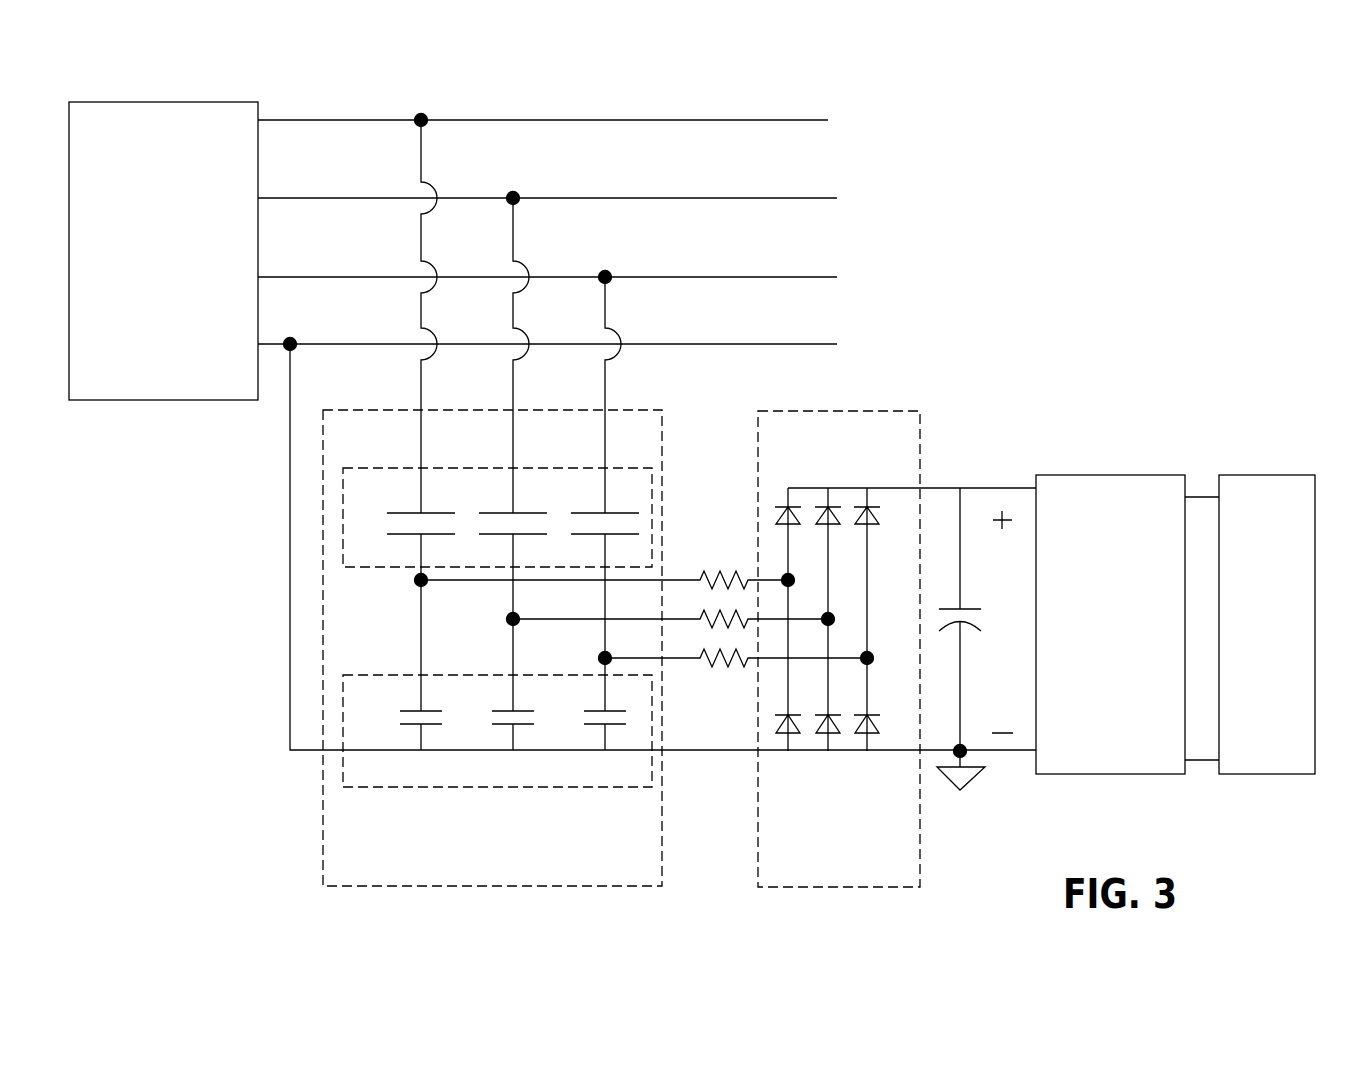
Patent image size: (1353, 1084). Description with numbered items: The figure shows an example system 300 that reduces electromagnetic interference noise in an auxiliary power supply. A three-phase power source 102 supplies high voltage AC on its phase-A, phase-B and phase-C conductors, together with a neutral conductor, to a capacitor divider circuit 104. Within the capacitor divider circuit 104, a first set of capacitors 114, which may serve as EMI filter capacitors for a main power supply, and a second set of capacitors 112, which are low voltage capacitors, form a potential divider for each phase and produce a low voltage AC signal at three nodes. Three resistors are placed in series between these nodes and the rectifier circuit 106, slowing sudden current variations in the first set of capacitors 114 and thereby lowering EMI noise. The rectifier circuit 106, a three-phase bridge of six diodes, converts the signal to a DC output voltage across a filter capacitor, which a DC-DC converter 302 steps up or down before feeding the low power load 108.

The system 300 is at (1233, 131).
The three-phase power source 102 is at (185, 400).
The capacitor divider circuit 104 is at (323, 838).
The rectifier circuit 106 is at (783, 887).
The load 108 is at (1273, 475).
The second set of capacitors 112 is at (343, 693).
The first set of capacitors 114 is at (343, 520).
The DC-DC converter 302 is at (1110, 475).